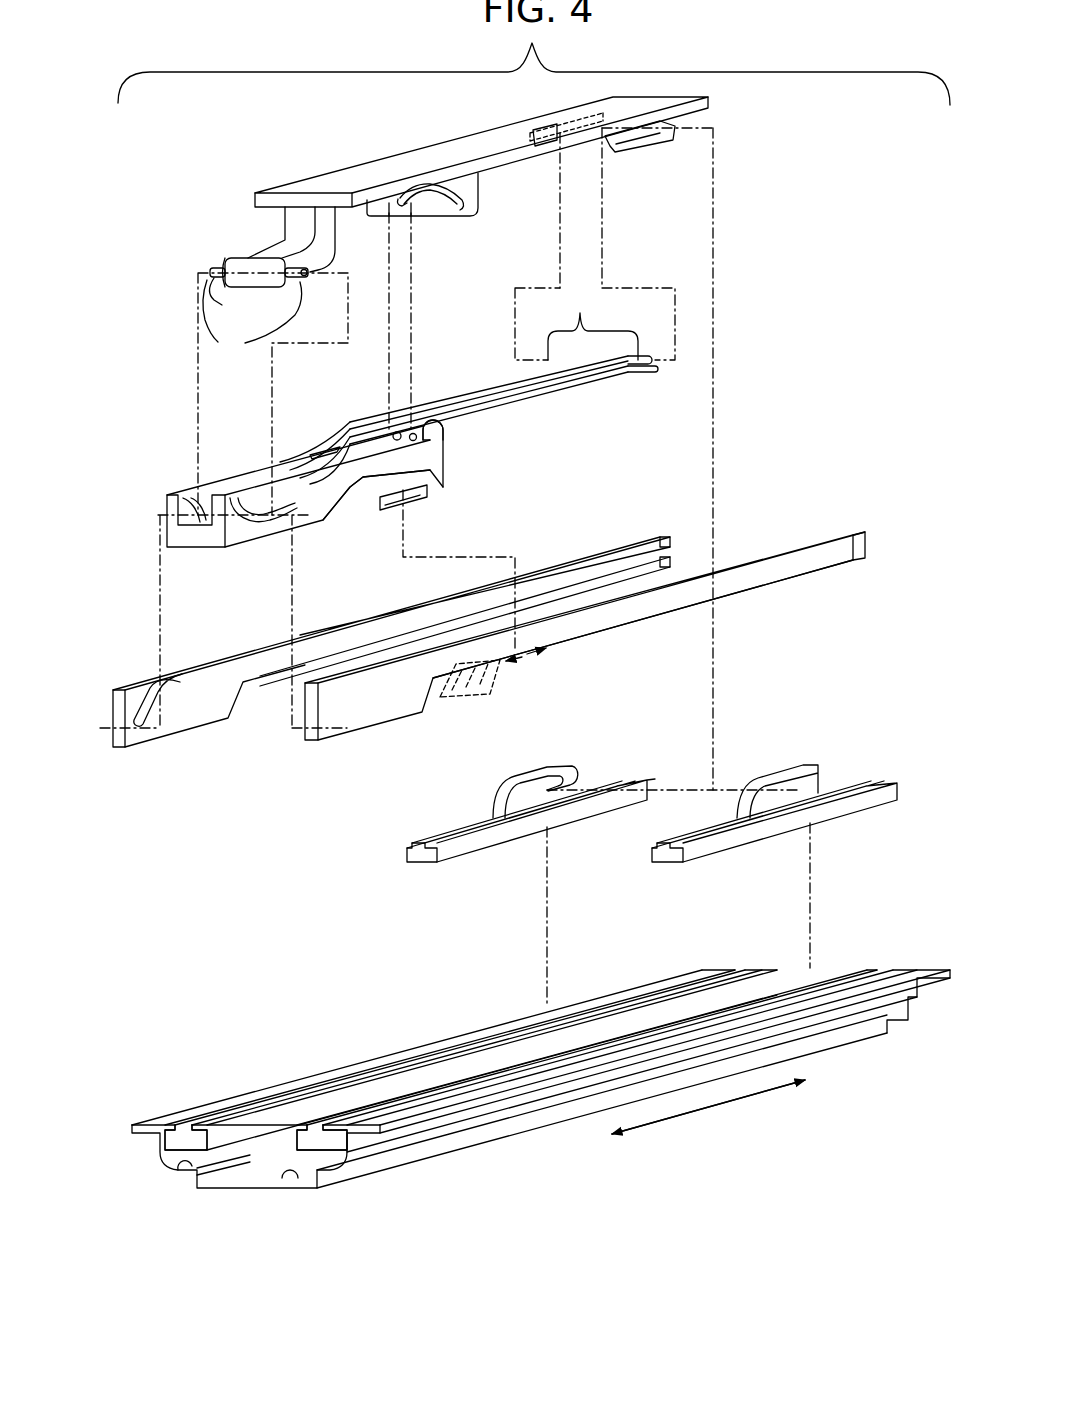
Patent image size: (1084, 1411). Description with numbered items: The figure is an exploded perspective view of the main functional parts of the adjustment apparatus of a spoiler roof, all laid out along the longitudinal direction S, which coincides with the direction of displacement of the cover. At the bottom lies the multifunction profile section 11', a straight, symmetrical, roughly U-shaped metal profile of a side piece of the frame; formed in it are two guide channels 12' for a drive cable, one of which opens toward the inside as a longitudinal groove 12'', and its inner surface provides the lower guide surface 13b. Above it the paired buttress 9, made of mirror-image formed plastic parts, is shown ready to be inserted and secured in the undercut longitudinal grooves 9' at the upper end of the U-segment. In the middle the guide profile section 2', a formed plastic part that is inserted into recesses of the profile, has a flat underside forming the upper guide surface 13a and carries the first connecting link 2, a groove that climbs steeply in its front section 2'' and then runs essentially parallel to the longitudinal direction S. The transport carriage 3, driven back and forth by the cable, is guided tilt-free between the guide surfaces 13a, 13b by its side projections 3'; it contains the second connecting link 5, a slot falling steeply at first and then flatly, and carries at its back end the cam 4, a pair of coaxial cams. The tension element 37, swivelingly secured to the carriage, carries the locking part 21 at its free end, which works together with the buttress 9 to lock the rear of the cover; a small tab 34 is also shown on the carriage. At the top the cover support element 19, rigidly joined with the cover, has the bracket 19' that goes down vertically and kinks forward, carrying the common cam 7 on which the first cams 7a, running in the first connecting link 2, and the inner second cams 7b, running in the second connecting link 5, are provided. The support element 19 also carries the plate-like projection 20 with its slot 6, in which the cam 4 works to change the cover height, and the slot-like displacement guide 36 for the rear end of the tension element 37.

The cover support element 19 is at (481, 147).
The bracket 19' is at (263, 239).
The common cam 7 is at (214, 250).
The first cams 7a is at (252, 318).
The second cams 7b is at (272, 309).
The slot 6 is at (463, 212).
The plate-like projection 20 is at (481, 189).
The slot-like displacement guide 36 is at (655, 160).
The locking part 21 is at (595, 322).
The tension element 37 is at (574, 402).
The cam 4 is at (444, 433).
The transport carriage 3 is at (310, 574).
The tab 34 is at (430, 492).
The projections 3' is at (411, 613).
The second connecting link 5 is at (255, 523).
The first connecting link 2 is at (391, 642).
The guide profile section 2' is at (585, 604).
The front section of the first connecting link 2'' is at (153, 679).
The upper guide surface 13a is at (760, 586).
The longitudinal direction S is at (520, 682).
The buttress 9 is at (652, 791).
The multifunction profile section 11' is at (541, 1075).
The undercut longitudinal grooves 9' is at (256, 1177).
The guide channels 12' is at (167, 1209).
The longitudinal groove 12'' is at (227, 1206).
The lower guide surface 13b is at (285, 1178).